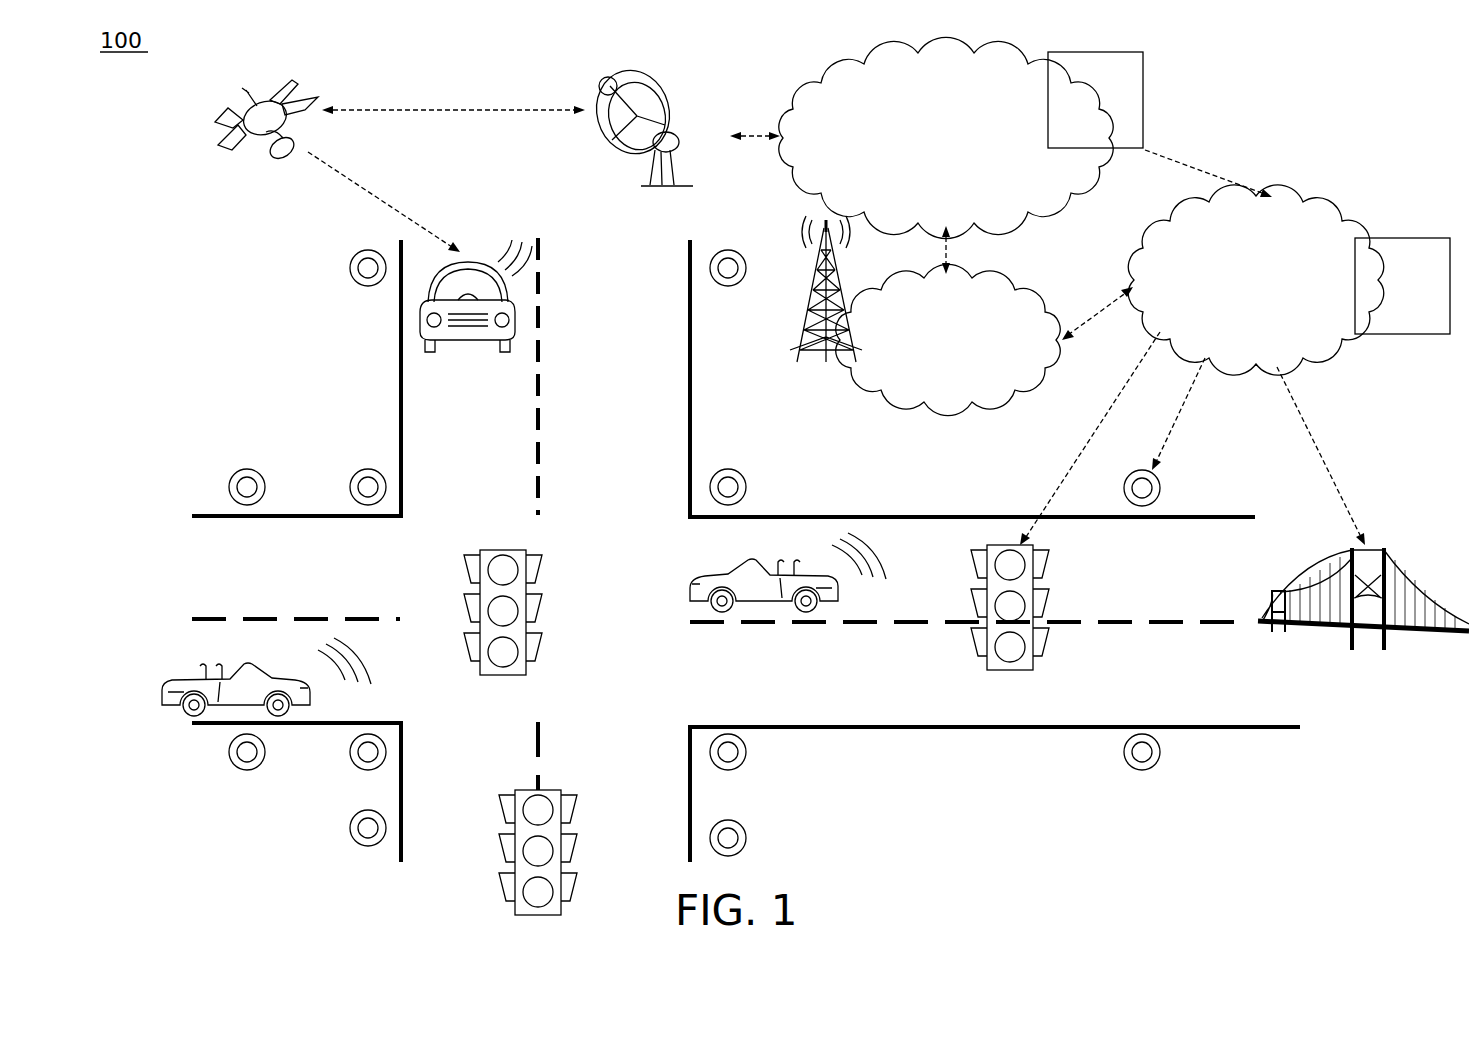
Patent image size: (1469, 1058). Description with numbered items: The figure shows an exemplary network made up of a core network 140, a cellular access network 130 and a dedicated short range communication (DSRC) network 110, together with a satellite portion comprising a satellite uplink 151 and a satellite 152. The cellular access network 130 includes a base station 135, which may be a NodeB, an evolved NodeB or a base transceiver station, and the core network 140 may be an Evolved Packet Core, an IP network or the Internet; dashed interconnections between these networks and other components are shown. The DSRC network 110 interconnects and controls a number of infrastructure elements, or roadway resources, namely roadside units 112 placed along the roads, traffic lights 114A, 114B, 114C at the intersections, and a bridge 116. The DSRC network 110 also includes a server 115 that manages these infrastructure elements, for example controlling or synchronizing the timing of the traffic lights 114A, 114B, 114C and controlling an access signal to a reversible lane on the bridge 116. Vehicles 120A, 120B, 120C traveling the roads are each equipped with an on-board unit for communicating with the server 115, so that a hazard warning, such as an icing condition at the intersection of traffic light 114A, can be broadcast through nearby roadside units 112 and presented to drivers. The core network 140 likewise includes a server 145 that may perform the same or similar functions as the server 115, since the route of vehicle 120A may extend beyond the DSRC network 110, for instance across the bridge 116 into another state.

The dedicated short range communication (DSRC) network 110 is at (1255, 304).
The roadside units (RSUs) 112 is at (350, 270).
The traffic light 114A is at (502, 675).
The traffic light 114B is at (1010, 672).
The traffic light 114C is at (518, 790).
The server 115 is at (1385, 312).
The bridge 116 is at (1390, 640).
The vehicle 120A is at (470, 356).
The vehicle 120B is at (228, 662).
The vehicle 120C is at (726, 564).
The cellular access network 130 is at (928, 379).
The base station 135 is at (832, 258).
The core network 140 is at (929, 164).
The server 145 is at (1078, 126).
The satellite uplink 151 is at (647, 170).
The satellite 152 is at (272, 160).